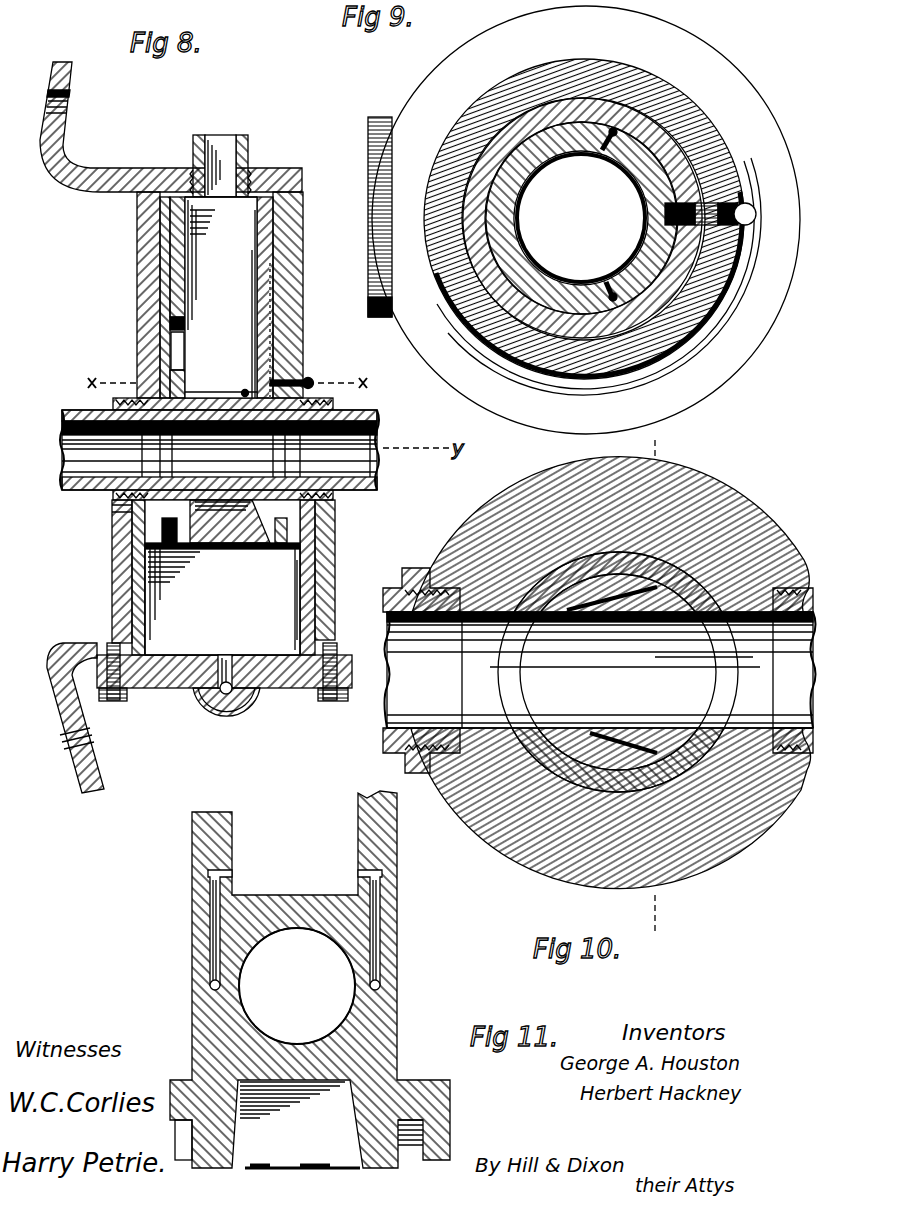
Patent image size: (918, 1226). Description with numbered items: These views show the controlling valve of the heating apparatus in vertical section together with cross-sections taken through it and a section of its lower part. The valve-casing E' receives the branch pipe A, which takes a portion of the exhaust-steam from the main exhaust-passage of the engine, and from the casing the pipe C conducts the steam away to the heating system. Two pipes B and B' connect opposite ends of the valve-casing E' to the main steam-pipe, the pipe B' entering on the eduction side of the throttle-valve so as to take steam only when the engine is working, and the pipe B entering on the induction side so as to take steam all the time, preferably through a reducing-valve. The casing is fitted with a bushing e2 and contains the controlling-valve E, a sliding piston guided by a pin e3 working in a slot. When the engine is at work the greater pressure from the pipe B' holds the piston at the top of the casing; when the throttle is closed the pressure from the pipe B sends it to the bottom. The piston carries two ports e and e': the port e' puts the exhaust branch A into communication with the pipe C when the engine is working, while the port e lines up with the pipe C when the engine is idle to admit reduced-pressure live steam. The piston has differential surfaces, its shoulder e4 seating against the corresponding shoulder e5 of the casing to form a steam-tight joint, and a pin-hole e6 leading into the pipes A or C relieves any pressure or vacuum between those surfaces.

In FIG. 8, the pipe B is at (220, 150).
In FIG. 8, the pipe B' is at (234, 696).
In FIG. 8, the pipe C is at (204, 450).
In FIG. 10, the pipe C is at (600, 672).
In FIG. 8, the branch pipe A is at (381, 456).
In FIG. 10, the branch pipe A is at (785, 660).
In FIG. 8, the controlling-valve E is at (229, 422).
In FIG. 9, the controlling-valve E is at (590, 213).
In FIG. 10, the controlling-valve E is at (634, 708).
In FIG. 11, the controlling-valve E is at (310, 979).
In FIG. 8, the valve-casing E' is at (196, 427).
In FIG. 9, the valve-casing E' is at (584, 220).
In FIG. 10, the valve-casing E' is at (608, 681).
In FIG. 8, the port e is at (215, 376).
In FIG. 9, the port e is at (581, 184).
In FIG. 10, the port e' is at (625, 670).
In FIG. 11, the port e' is at (297, 986).
In FIG. 8, the bushing e2 is at (292, 284).
In FIG. 10, the bushing e2 is at (705, 840).
In FIG. 8, the pin e3 is at (242, 391).
In FIG. 9, the pin e3 is at (603, 155).
In FIG. 10, the pin e3 is at (612, 670).
In FIG. 11, the pin e3 is at (236, 876).
In FIG. 8, the shoulder e4 is at (338, 533).
In FIG. 8, the shoulder e5 is at (390, 497).
In FIG. 9, the shoulder e5 is at (711, 194).
In FIG. 10, the shoulder e5 is at (605, 735).
In FIG. 8, the pin-hole e6 is at (100, 511).